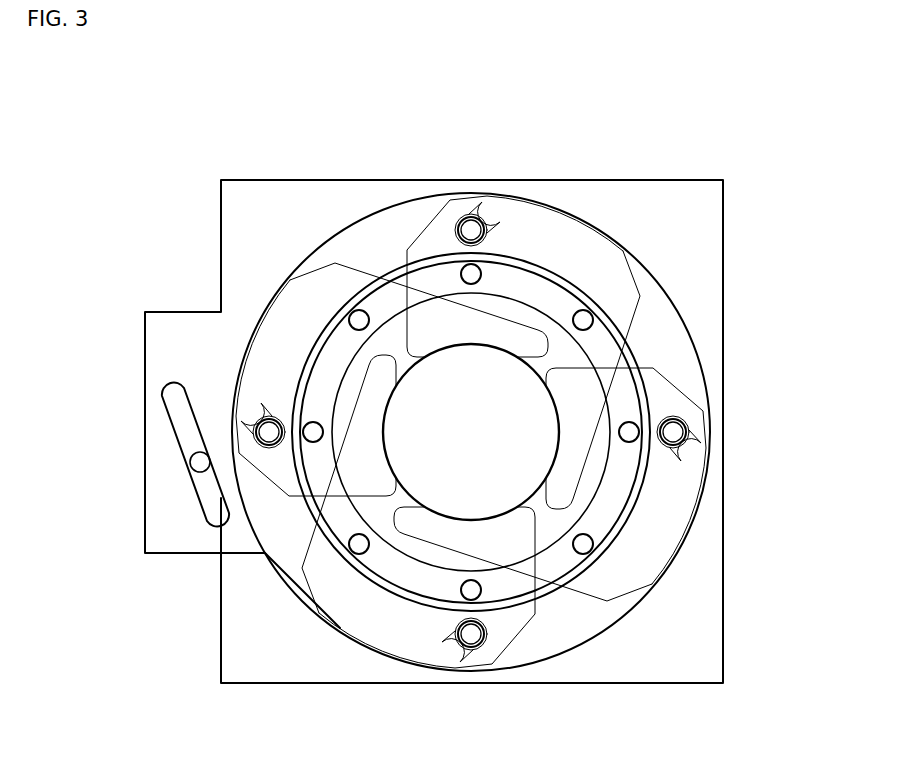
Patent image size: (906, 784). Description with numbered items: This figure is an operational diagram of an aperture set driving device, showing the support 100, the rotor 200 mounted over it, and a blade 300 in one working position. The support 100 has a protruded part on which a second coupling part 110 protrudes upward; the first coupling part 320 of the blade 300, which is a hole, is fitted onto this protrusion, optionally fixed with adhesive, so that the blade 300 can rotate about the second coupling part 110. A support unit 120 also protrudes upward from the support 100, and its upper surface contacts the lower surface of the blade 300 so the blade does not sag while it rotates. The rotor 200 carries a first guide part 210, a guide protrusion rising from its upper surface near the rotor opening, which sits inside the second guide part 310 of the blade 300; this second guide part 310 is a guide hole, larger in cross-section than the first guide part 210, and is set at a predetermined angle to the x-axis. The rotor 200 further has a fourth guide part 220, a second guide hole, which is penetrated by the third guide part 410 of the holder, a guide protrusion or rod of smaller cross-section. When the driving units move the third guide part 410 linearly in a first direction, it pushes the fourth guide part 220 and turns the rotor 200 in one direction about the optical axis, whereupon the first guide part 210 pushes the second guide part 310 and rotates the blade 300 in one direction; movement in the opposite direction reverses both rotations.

The support 100 is at (270, 192).
The rotor 200 is at (383, 222).
The first guide part 210 is at (471, 228).
The second guide part 310 is at (492, 212).
The first coupling part 320 is at (472, 266).
The second coupling part 110 is at (462, 252).
The support unit 120 is at (583, 320).
The blade 300 is at (637, 279).
The third guide part 410 is at (191, 458).
The fourth guide part 220 is at (198, 498).